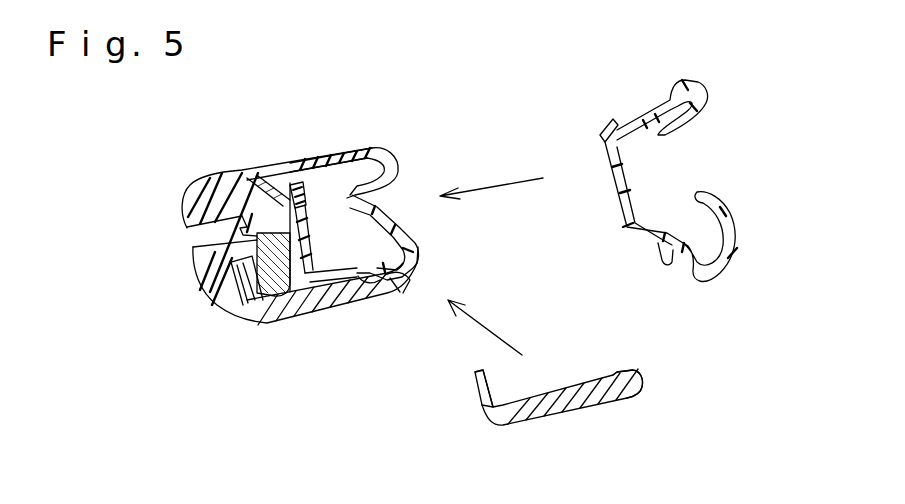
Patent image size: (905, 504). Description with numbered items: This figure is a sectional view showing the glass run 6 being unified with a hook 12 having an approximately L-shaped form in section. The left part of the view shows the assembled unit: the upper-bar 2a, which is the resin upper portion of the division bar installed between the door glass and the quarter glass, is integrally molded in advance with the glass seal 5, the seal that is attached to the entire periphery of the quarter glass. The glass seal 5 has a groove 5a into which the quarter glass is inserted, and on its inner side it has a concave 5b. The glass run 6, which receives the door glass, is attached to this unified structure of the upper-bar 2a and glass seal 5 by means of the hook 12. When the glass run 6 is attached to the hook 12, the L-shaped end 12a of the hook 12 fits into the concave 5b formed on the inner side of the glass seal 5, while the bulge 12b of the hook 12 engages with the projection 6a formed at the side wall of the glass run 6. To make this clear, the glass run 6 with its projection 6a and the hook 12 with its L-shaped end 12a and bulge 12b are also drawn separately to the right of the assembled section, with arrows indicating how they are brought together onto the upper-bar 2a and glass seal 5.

The upper-bar 2a is at (263, 190).
The glass seal 5 is at (193, 183).
The groove 5a is at (203, 233).
The concave 5b is at (237, 260).
The glass run 6 is at (395, 155).
The projection 6a is at (370, 295).
The hook 12 is at (288, 312).
The L-shaped end 12a is at (227, 293).
The bulge 12b is at (400, 286).